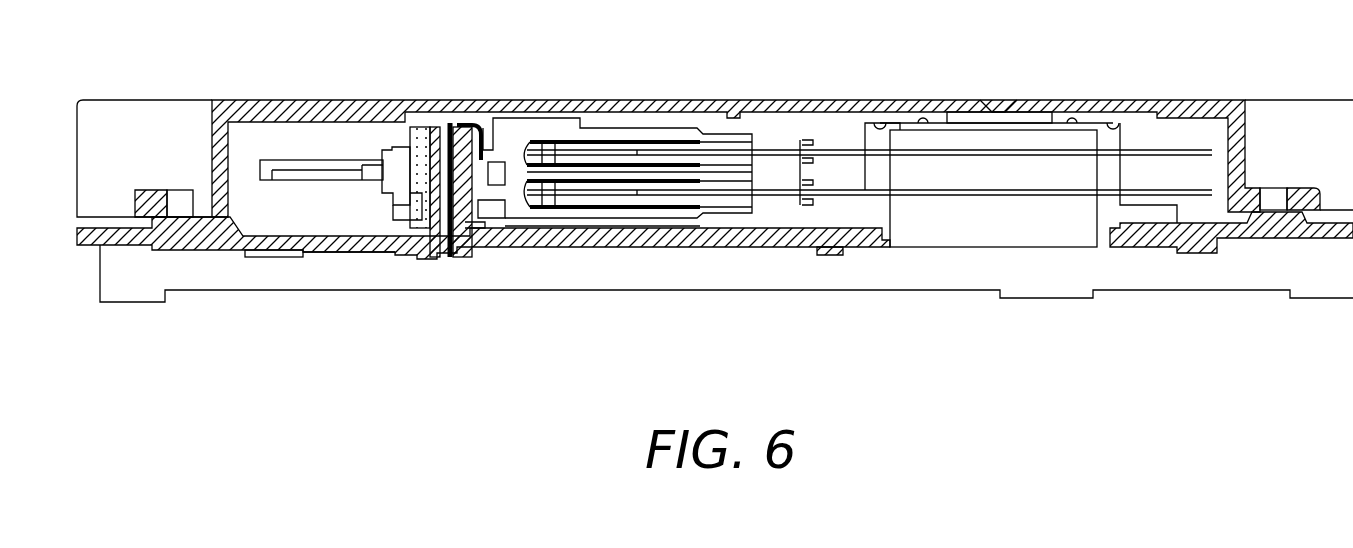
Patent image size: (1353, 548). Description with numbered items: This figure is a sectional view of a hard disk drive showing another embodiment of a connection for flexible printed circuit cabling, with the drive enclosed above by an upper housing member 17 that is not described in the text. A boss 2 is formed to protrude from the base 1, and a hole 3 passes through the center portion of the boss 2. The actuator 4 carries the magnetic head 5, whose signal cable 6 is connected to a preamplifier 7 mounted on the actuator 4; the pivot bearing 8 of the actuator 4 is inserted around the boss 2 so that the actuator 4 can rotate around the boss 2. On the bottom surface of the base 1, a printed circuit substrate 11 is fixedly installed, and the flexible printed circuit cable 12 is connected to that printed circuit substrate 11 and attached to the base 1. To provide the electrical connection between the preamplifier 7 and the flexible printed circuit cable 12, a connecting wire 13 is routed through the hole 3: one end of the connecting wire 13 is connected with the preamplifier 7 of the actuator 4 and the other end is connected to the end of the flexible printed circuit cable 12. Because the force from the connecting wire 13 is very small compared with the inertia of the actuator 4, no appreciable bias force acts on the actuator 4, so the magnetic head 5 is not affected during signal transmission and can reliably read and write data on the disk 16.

The base 1 is at (717, 247).
The boss 2 is at (440, 203).
The hole 3 is at (452, 257).
The actuator 4 is at (628, 135).
The magnetic head 5 is at (812, 150).
The signal cable 6 is at (520, 130).
The preamplifier 7 is at (505, 185).
The pivot bearing 8 is at (413, 140).
The printed circuit substrate 11 is at (275, 257).
The flexible printed circuit cable 12 is at (350, 253).
The connecting wire 13 is at (447, 257).
The disk 16 is at (855, 147).
The cover 17 is at (756, 98).